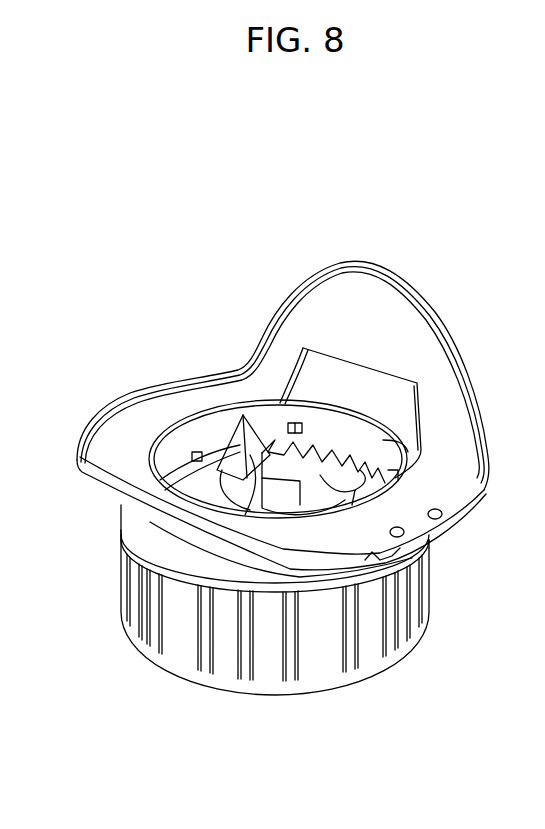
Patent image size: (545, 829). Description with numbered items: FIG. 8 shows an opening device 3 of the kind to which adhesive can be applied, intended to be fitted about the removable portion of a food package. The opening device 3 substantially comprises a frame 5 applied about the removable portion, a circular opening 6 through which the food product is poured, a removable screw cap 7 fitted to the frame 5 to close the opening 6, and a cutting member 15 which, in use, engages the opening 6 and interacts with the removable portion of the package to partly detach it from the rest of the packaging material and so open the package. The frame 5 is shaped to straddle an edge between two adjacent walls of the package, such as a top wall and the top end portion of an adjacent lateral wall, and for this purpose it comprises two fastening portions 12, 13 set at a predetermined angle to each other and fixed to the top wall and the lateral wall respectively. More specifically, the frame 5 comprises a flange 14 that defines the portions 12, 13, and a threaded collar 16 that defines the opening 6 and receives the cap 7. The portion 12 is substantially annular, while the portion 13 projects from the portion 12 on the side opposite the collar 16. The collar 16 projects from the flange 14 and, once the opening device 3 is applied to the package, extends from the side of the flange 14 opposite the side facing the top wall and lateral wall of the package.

The opening device 3 is at (210, 292).
The frame 5 is at (97, 515).
The circular opening 6 is at (186, 438).
The removable screw cap 7 is at (327, 657).
The fastening portion 12 is at (120, 448).
The fastening portion 13 is at (392, 314).
The flange 14 is at (285, 335).
The cutting member 15 is at (250, 450).
The threaded collar 16 is at (166, 537).